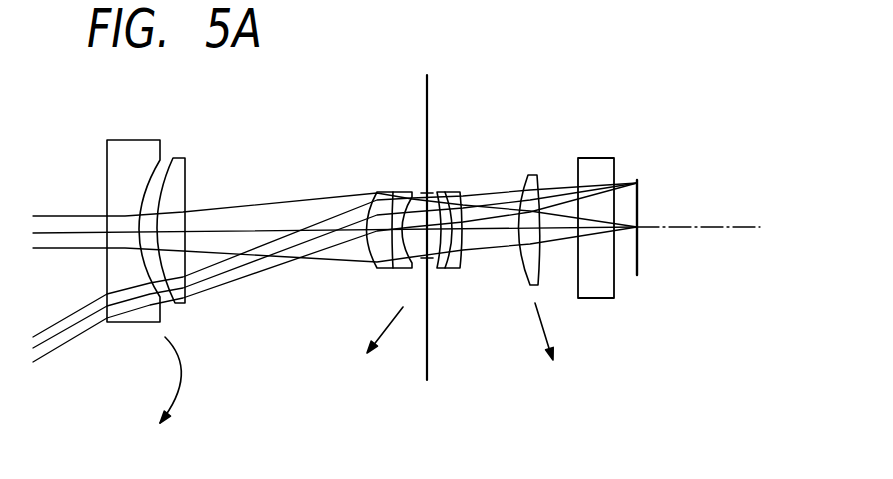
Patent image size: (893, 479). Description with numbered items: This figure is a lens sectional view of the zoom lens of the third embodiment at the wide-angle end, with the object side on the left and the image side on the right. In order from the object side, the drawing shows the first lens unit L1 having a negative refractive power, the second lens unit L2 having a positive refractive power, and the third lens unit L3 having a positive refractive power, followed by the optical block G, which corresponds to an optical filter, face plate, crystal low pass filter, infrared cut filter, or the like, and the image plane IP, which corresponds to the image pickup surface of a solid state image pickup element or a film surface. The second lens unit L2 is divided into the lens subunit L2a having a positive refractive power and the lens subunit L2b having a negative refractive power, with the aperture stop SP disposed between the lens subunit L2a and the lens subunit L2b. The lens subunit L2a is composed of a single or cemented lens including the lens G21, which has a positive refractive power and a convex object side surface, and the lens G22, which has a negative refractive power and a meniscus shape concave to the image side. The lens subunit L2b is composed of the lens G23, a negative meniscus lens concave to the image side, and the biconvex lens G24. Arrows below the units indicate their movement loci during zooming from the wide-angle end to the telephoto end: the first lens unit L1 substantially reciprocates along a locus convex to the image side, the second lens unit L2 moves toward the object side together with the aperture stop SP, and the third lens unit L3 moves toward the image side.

The first lens unit L1 is at (147, 206).
The second lens unit L2 is at (406, 205).
The lens subunit L2a is at (354, 217).
The lens subunit L2b is at (476, 205).
The third lens unit L3 is at (531, 205).
The lens G21 is at (377, 191).
The lens G22 is at (393, 268).
The lens G23 is at (447, 270).
The biconvex lens G24 is at (457, 190).
The aperture stop SP is at (428, 100).
The optical block G is at (598, 157).
The image plane IP is at (639, 203).